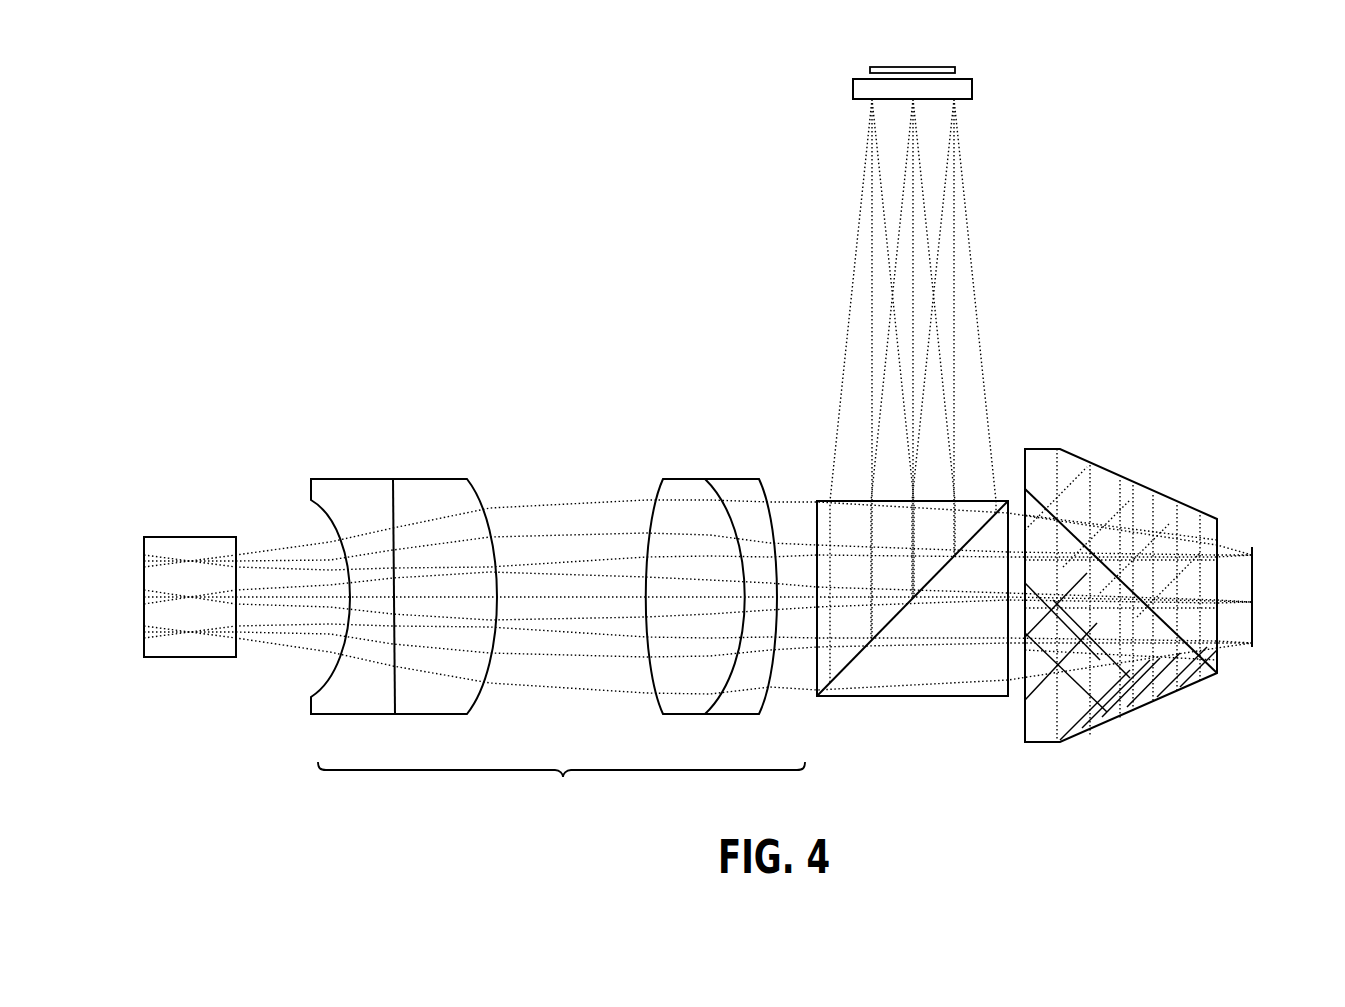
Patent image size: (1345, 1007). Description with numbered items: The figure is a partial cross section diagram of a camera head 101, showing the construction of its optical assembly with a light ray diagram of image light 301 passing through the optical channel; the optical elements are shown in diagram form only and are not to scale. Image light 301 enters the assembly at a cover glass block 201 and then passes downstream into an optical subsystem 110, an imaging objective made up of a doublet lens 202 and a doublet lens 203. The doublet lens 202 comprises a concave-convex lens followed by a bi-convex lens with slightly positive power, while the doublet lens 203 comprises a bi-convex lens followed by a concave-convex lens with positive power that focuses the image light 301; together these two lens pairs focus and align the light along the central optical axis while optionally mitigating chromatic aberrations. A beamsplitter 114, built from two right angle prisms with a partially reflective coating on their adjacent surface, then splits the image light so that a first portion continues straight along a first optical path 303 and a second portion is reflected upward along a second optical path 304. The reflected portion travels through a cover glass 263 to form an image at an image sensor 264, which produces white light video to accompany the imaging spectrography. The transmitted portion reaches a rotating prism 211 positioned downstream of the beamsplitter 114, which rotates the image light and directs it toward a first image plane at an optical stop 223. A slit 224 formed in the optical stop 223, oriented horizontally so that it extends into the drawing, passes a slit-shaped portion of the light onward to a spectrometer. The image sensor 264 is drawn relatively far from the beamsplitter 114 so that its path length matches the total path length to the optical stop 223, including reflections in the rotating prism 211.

The camera head 101 is at (470, 220).
The cover glass block 201 is at (231, 537).
The doublet lens 202 is at (397, 478).
The doublet lens 203 is at (718, 478).
The optical subsystem 110 is at (561, 782).
The image light 301 is at (570, 507).
The beamsplitter 114 is at (823, 500).
The second optical path 304 is at (985, 307).
The cover glass 263 is at (975, 92).
The image sensor 264 is at (937, 67).
The rotating prism 211 is at (1118, 428).
The first optical path 303 is at (1018, 675).
The optical stop 223 is at (1252, 557).
The slit 224 is at (1252, 602).